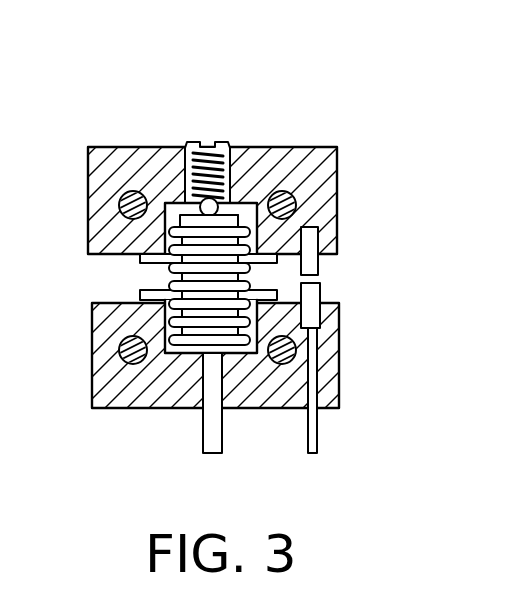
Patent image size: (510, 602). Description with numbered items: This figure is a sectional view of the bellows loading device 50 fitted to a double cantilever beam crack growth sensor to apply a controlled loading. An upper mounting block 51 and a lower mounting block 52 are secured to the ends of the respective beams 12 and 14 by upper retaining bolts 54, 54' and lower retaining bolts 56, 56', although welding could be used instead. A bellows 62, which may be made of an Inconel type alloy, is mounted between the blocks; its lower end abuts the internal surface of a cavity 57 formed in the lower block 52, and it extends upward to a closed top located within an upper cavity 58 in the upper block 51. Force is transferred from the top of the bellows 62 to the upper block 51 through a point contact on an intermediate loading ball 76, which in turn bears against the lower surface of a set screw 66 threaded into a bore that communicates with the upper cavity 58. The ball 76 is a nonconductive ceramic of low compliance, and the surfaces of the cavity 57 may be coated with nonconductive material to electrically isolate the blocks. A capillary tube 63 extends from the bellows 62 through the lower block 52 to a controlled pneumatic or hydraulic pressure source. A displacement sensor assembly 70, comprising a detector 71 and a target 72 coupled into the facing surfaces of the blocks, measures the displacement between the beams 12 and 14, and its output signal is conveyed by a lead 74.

The bellows loading device 50 is at (206, 95).
The upper mounting block 51 is at (338, 160).
The lower mounting block 52 is at (340, 363).
The upper retaining bolt 54 is at (324, 205).
The upper retaining bolt 54' is at (90, 205).
The lower retaining bolt 56 is at (268, 386).
The lower retaining bolt 56' is at (94, 350).
The cavity 57 is at (173, 357).
The upper cavity 58 is at (242, 148).
The bellows 62 is at (100, 313).
The capillary tube 63 is at (216, 454).
The set screw 66 is at (225, 148).
The displacement sensor assembly 70 is at (356, 277).
The detector 71 is at (322, 303).
The target 72 is at (320, 264).
The lead 74 is at (318, 428).
The intermediate loading ball 76 is at (203, 201).
The beam 12 is at (140, 262).
The beam 14 is at (140, 295).